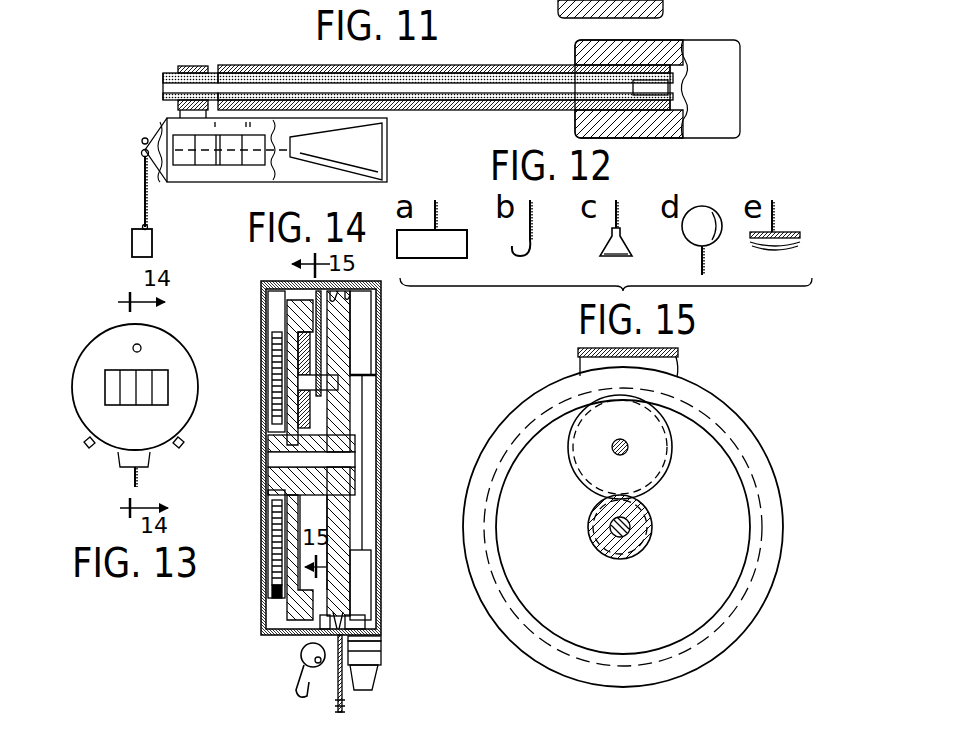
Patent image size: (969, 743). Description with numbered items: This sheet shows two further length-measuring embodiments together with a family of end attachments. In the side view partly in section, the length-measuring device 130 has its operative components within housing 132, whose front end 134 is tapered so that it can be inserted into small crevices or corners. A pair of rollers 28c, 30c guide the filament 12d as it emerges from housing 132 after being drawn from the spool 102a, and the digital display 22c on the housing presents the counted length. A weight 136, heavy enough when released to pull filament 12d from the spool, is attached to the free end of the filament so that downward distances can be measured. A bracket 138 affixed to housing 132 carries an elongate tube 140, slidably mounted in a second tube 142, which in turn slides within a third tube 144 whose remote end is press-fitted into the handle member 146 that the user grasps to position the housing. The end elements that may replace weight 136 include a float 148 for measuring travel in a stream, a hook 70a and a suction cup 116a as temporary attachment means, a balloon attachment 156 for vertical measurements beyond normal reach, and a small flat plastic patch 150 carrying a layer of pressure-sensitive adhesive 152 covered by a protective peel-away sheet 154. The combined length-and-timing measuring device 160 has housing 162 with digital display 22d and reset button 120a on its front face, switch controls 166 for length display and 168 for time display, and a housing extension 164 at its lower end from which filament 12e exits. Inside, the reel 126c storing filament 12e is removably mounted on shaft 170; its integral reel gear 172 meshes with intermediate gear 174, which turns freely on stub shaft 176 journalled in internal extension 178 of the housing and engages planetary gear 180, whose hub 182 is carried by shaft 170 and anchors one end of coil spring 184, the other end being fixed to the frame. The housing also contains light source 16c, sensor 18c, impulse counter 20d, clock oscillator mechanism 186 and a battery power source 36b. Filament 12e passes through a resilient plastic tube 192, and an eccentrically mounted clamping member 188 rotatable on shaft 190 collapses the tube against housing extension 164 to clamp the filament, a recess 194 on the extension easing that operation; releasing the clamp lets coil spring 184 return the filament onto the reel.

In FIG. 11, the length-measuring device 130 is at (212, 42).
In FIG. 11, the housing 132 is at (387, 138).
In FIG. 11, the front end 134 is at (168, 122).
In FIG. 11, the weight 136 is at (132, 242).
In FIG. 11, the bracket 138 is at (195, 68).
In FIG. 11, the elongate tube 140 is at (163, 86).
In FIG. 11, the second tube 142 is at (300, 65).
In FIG. 11, the third tube 144 is at (470, 65).
In FIG. 11, the handle member 146 is at (725, 45).
In FIG. 11, the roller 28c is at (142, 141).
In FIG. 11, the roller 30c is at (142, 154).
In FIG. 11, the filament 12d is at (138, 186).
In FIG. 12, the filament 12d is at (447, 186).
In FIG. 11, the digital display 22c is at (203, 166).
In FIG. 11, the spool 102a is at (356, 160).
In FIG. 12, the float 148 is at (467, 244).
In FIG. 12, the hook 70a is at (532, 246).
In FIG. 12, the suction cup 116a is at (606, 250).
In FIG. 12, the balloon attachment 156 is at (700, 210).
In FIG. 12, the flat plastic patch 150 is at (780, 235).
In FIG. 12, the pressure-sensitive adhesive 152 is at (755, 243).
In FIG. 12, the protective peel-away sheet 154 is at (800, 248).
In FIG. 13, the measuring device 160 is at (92, 333).
In FIG. 14, the measuring device 160 is at (254, 613).
In FIG. 13, the housing 162 is at (172, 344).
In FIG. 14, the housing 162 is at (380, 338).
In FIG. 15, the housing 162 is at (680, 349).
In FIG. 13, the reset button 120a is at (142, 350).
In FIG. 13, the digital display 22d is at (160, 388).
In FIG. 14, the digital display 22d is at (375, 513).
In FIG. 13, the switch control 166 is at (90, 445).
In FIG. 13, the switch control 168 is at (181, 446).
In FIG. 13, the housing extension 164 is at (122, 463).
In FIG. 14, the housing extension 164 is at (381, 655).
In FIG. 13, the filament 12e is at (139, 476).
In FIG. 14, the filament 12e is at (345, 703).
In FIG. 14, the planetary gear 180 is at (300, 311).
In FIG. 15, the planetary gear 180 is at (740, 432).
In FIG. 14, the clock oscillator mechanism 186 is at (375, 313).
In FIG. 14, the internal extension 178 is at (324, 348).
In FIG. 14, the stub shaft 176 is at (320, 384).
In FIG. 15, the stub shaft 176 is at (628, 448).
In FIG. 14, the intermediate gear 174 is at (308, 420).
In FIG. 15, the intermediate gear 174 is at (573, 470).
In FIG. 14, the impulse counter 20d is at (355, 450).
In FIG. 14, the shaft 170 is at (286, 465).
In FIG. 15, the shaft 170 is at (607, 540).
In FIG. 14, the hub 182 is at (272, 490).
In FIG. 14, the reel gear 172 is at (330, 505).
In FIG. 15, the reel gear 172 is at (652, 523).
In FIG. 14, the reel 126c is at (340, 545).
In FIG. 14, the coil spring 184 is at (292, 530).
In FIG. 14, the power source 36b is at (375, 590).
In FIG. 14, the sensor 18c is at (370, 622).
In FIG. 14, the recess 194 is at (362, 641).
In FIG. 14, the resilient plastic tube 192 is at (372, 680).
In FIG. 14, the light source 16c is at (312, 637).
In FIG. 14, the shaft 190 is at (315, 663).
In FIG. 14, the clamping member 188 is at (300, 690).